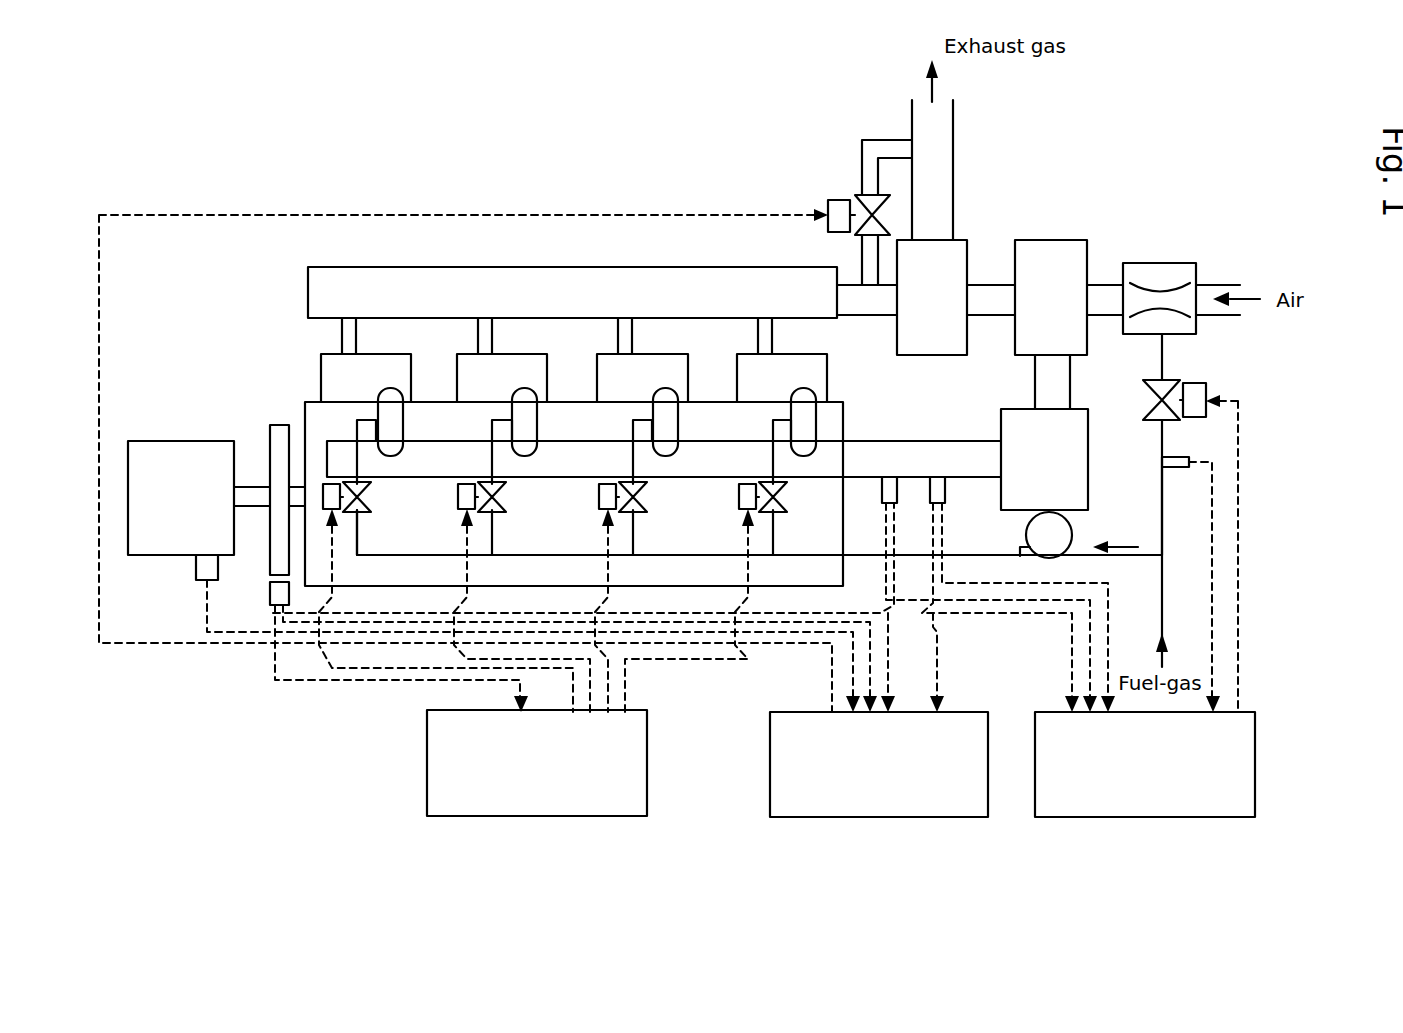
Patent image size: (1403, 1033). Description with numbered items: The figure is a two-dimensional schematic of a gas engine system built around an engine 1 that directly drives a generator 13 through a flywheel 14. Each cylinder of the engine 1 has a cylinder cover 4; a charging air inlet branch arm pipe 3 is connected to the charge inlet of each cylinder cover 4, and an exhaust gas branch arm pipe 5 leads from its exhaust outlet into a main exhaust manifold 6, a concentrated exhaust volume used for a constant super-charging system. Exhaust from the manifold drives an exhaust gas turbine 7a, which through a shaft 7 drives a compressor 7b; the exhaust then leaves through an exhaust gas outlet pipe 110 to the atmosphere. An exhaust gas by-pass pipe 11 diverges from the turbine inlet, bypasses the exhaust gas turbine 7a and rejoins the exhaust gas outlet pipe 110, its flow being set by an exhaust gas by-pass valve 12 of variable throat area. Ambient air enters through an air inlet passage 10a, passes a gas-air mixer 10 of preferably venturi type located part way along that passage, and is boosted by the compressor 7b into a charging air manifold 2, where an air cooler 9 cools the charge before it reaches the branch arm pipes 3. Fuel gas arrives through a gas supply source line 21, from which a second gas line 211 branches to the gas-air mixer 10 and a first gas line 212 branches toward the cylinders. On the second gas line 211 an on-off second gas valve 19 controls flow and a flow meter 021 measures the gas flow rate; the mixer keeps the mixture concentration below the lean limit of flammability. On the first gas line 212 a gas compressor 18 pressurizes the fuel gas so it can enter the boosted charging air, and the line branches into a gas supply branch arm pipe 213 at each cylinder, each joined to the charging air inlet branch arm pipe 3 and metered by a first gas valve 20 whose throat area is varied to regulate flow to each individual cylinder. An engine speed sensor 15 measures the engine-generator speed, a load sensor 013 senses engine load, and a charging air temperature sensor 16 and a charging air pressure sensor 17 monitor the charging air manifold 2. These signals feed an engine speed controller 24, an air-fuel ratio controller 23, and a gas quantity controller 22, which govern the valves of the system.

The engine 1 is at (363, 578).
The charging air manifold 2 is at (937, 441).
The charging air inlet branch arm pipe 3 is at (792, 403).
The cylinder cover 4 is at (321, 372).
The exhaust gas branch arm pipe 5 is at (342, 332).
The main exhaust manifold 6 is at (545, 267).
The shaft 7 is at (990, 252).
The exhaust gas turbine 7a is at (960, 238).
The compressor 7b is at (1073, 240).
The air cooler 9 is at (1088, 412).
The gas-air mixer 10 is at (1170, 263).
The air inlet passage 10a is at (1222, 283).
The exhaust gas by-pass pipe 11 is at (877, 145).
The exhaust gas by-pass valve 12 is at (850, 194).
The generator 13 is at (172, 441).
The flywheel 14 is at (276, 425).
The engine speed sensor 15 is at (270, 590).
The charging air temperature sensor 16 is at (882, 503).
The charging air pressure sensor 17 is at (947, 498).
The gas compressor 18 is at (1075, 528).
The second gas valve 19 is at (1207, 383).
The first gas valve 20 is at (803, 522).
The gas supply source line 21 is at (1162, 600).
The gas quantity controller 22 is at (1188, 818).
The air-fuel ratio controller 23 is at (933, 818).
The engine speed controller 24 is at (588, 818).
The exhaust gas outlet pipe 110 is at (947, 121).
The second gas line 211 is at (1162, 525).
The first gas line 212 is at (1133, 558).
The gas supply branch arm pipe 213 is at (358, 537).
The load sensor 013 is at (196, 568).
The flow meter 021 is at (1190, 452).